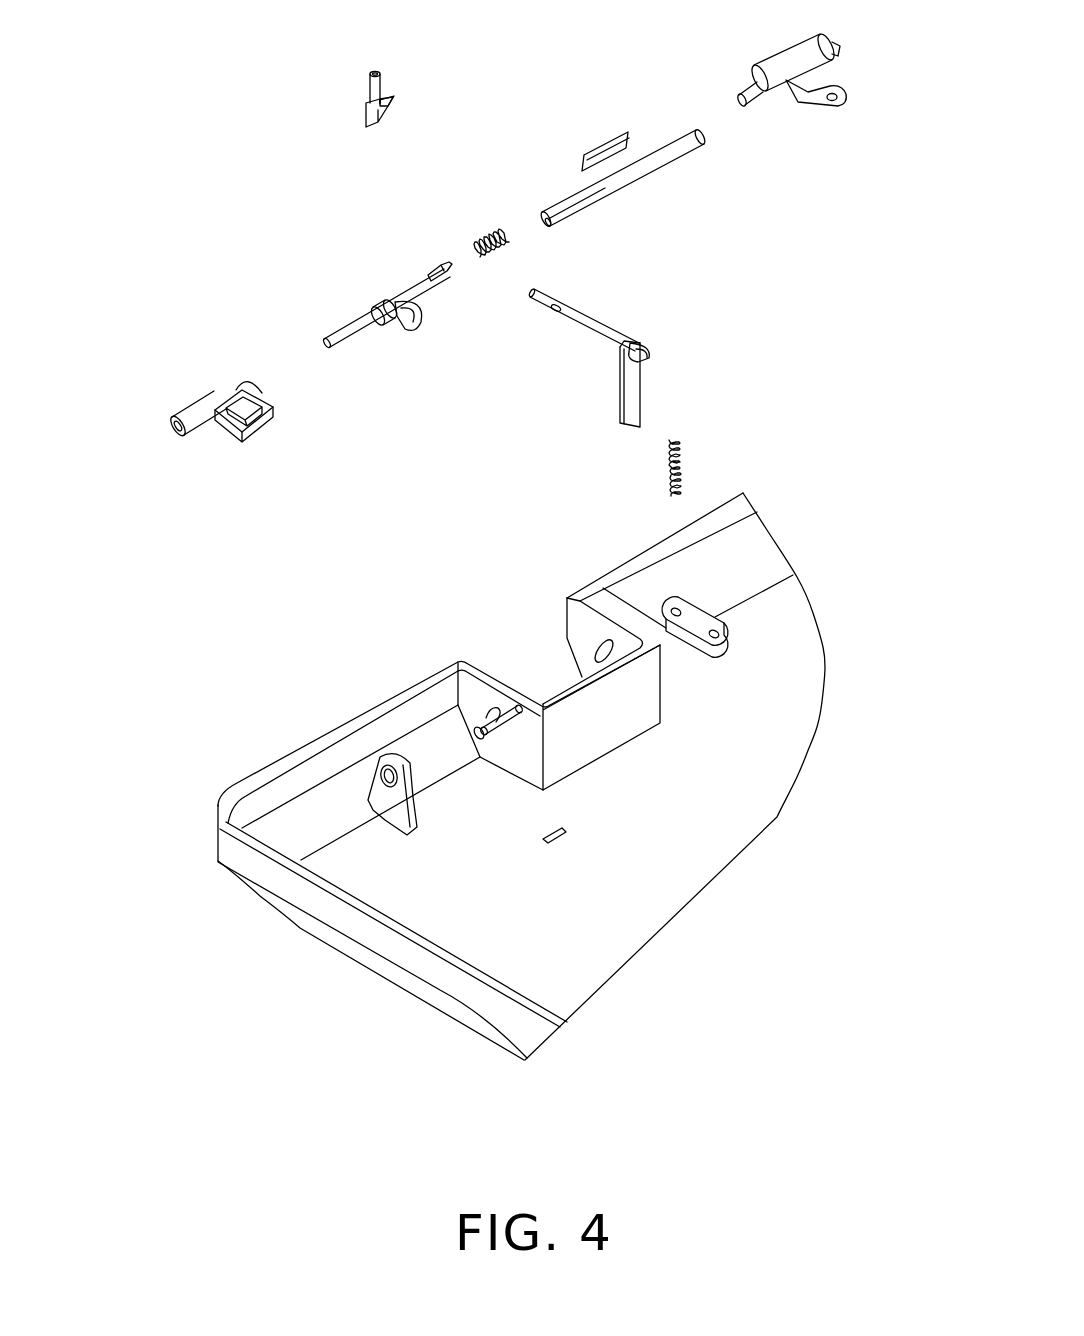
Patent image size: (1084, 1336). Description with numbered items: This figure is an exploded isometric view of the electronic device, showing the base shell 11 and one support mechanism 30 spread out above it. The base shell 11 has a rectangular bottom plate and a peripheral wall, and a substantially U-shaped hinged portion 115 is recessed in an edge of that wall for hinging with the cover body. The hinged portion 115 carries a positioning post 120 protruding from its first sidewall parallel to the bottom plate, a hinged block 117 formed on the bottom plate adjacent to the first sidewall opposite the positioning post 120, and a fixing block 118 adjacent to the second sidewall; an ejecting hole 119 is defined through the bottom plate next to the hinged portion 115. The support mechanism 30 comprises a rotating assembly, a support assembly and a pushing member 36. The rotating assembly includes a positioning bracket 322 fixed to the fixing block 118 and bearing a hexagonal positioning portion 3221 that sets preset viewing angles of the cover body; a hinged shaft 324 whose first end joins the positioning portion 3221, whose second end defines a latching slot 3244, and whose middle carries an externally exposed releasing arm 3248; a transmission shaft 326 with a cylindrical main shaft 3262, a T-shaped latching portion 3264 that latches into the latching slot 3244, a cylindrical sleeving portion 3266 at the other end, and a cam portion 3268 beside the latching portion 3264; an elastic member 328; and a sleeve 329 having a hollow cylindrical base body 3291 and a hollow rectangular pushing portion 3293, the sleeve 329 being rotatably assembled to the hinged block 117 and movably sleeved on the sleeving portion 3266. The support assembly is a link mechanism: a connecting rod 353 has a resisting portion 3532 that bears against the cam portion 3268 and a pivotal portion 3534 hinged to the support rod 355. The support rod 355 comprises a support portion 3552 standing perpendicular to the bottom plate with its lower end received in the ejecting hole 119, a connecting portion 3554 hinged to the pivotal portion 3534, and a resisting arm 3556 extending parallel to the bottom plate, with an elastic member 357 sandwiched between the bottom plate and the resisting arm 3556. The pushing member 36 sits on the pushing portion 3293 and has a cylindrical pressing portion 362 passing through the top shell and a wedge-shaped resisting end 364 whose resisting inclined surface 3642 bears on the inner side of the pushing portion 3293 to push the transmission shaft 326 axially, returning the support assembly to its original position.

The base shell 11 is at (310, 895).
The support mechanism 30 is at (857, 213).
The pushing member 36 is at (270, 50).
The pressing portion 362 is at (372, 76).
The resisting end 364 is at (368, 112).
The resisting inclined surface 3642 is at (386, 110).
The positioning bracket 322 is at (790, 58).
The positioning portion 3221 is at (758, 102).
The hinged shaft 324 is at (665, 145).
The releasing arm 3248 is at (605, 165).
The latching slot 3244 is at (550, 228).
The elastic member 328 is at (488, 243).
The transmission shaft 326 is at (363, 187).
The main shaft 3262 is at (367, 300).
The latching portion 3264 is at (430, 288).
The sleeving portion 3266 is at (337, 330).
The cam portion 3268 is at (402, 327).
The sleeve 329 is at (155, 318).
The base body 3291 is at (195, 418).
The pushing portion 3293 is at (240, 398).
The connecting rod 353 is at (517, 382).
The resisting portion 3532 is at (545, 307).
The pivotal portion 3534 is at (613, 338).
The support rod 355 is at (787, 312).
The support portion 3552 is at (637, 413).
The connecting portion 3554 is at (637, 367).
The resisting arm 3556 is at (647, 350).
The elastic member 357 is at (678, 467).
The hinged portion 115 is at (623, 723).
The hinged block 117 is at (385, 802).
The fixing block 118 is at (717, 652).
The ejecting hole 119 is at (567, 833).
The positioning post 120 is at (505, 717).